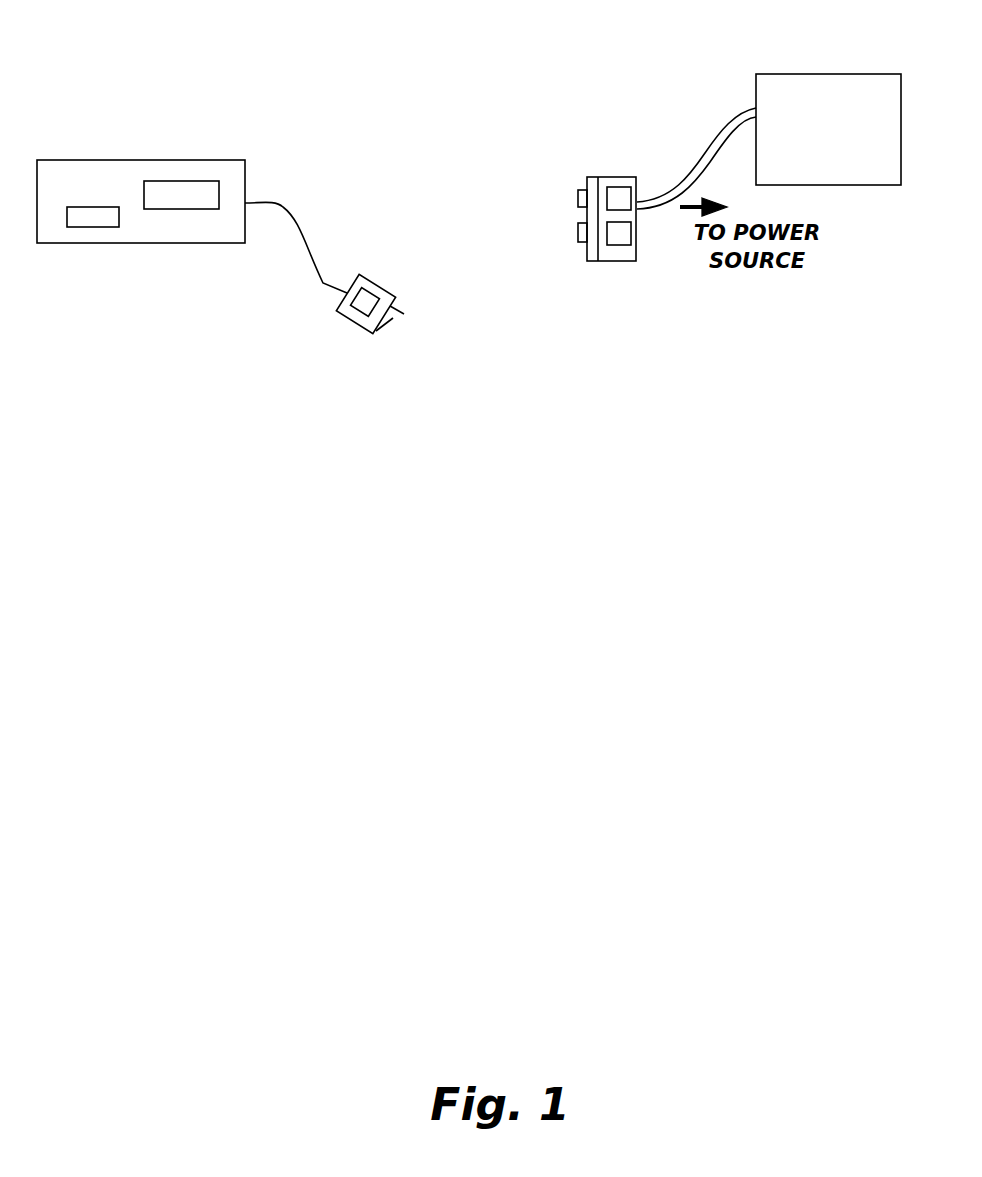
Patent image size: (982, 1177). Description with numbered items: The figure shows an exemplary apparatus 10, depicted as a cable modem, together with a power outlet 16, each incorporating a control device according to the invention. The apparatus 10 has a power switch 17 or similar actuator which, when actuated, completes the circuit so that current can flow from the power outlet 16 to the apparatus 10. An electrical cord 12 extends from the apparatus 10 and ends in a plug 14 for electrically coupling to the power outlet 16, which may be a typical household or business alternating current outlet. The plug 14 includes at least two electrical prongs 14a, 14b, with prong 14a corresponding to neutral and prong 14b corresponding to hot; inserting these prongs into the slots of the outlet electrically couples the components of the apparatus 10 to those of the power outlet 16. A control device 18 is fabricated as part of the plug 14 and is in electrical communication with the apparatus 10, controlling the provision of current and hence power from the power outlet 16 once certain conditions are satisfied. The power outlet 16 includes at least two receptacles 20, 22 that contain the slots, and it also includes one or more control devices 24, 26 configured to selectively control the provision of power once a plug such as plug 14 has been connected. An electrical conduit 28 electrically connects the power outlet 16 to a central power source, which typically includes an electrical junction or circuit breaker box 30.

The apparatus 10 is at (110, 160).
The electrical cord 12 is at (290, 208).
The plug 14 is at (358, 329).
The electrical prong 14a is at (392, 328).
The electrical prong 14b is at (403, 312).
The power outlet 16 is at (608, 177).
The power switch 17 is at (91, 227).
The control device 18 is at (377, 277).
The receptacle 20 is at (578, 197).
The receptacle 22 is at (578, 233).
The control device 24 is at (618, 238).
The control device 26 is at (618, 198).
The electrical conduit 28 is at (688, 173).
The electrical junction or circuit breaker box 30 is at (793, 74).